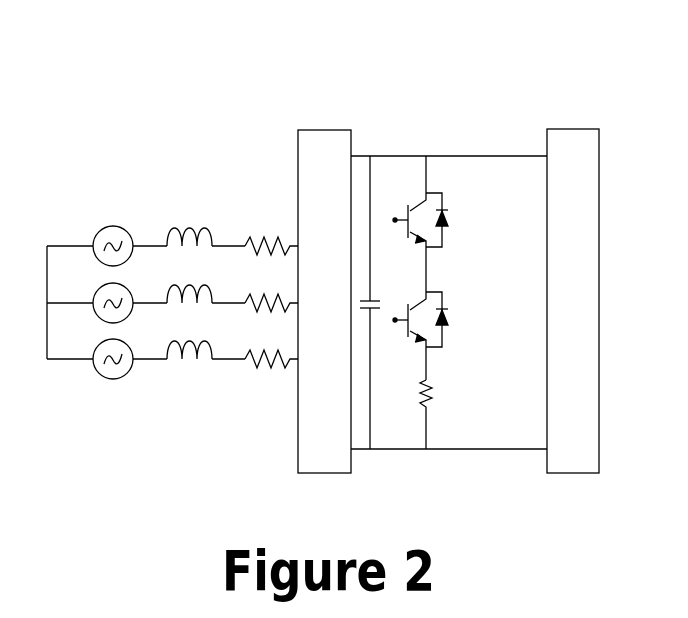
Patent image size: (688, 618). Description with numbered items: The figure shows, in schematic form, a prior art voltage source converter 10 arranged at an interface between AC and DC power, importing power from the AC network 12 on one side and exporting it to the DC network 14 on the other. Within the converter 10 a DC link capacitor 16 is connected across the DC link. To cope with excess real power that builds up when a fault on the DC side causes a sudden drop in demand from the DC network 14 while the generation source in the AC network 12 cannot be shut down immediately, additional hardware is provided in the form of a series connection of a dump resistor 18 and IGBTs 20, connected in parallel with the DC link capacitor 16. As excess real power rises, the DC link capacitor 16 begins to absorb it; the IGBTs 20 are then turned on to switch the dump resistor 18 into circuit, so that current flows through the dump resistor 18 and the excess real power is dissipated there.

The converter 10 is at (318, 153).
The AC network 12 is at (102, 214).
The DC network 14 is at (570, 157).
The DC link capacitor 16 is at (379, 295).
The dump resistor 18 is at (437, 396).
The IGBTs 20 is at (452, 218).